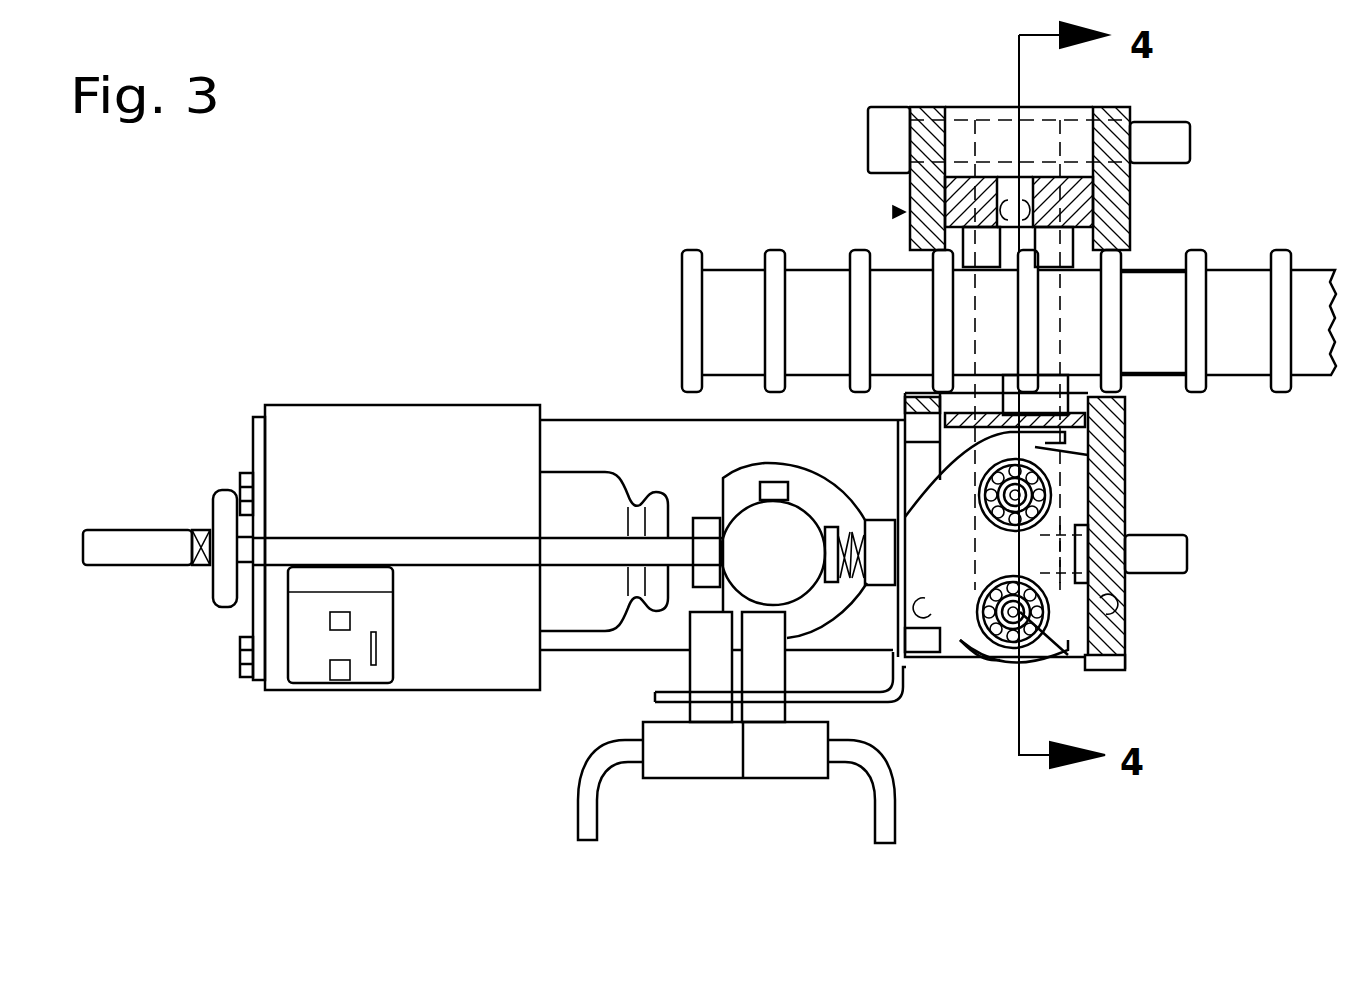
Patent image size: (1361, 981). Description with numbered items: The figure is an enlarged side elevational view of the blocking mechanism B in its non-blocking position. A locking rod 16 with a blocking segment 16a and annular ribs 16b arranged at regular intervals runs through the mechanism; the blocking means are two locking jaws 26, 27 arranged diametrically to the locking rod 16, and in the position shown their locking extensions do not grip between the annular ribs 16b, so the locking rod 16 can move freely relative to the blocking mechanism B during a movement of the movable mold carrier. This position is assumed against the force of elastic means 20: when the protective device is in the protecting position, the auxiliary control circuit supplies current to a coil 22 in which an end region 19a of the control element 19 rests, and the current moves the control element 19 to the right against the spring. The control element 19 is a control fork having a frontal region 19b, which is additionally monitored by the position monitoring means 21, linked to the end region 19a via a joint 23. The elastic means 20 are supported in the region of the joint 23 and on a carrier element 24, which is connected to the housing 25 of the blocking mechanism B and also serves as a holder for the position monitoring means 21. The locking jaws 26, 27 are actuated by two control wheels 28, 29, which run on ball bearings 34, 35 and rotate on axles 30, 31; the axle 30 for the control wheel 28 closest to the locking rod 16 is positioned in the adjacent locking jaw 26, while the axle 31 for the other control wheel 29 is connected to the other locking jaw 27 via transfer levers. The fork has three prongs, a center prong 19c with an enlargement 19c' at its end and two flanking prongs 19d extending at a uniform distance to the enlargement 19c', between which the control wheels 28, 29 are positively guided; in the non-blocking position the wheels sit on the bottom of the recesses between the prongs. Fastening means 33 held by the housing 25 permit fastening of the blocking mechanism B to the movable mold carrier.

The locking rod 16 is at (1315, 365).
The blocking segment 16a is at (1150, 337).
The annular ribs 16b is at (1278, 387).
The control element 19 is at (700, 600).
The end region 19a is at (133, 548).
The frontal region 19b is at (812, 608).
The center prong 19c is at (1164, 535).
The enlargement 19c' is at (1147, 576).
The flanking prongs 19d is at (1030, 668).
The elastic means 20 is at (870, 520).
The position monitoring means 21 is at (768, 665).
The coil 22 is at (393, 435).
The joint 23 is at (792, 577).
The carrier element 24 is at (903, 662).
The housing 25 is at (1108, 210).
The locking jaw 26 is at (985, 412).
The locking jaw 27 is at (970, 200).
The control wheel 28 is at (1057, 498).
The control wheel 29 is at (1010, 650).
The axle 30 is at (995, 530).
The axle 31 is at (995, 670).
The fastening means 33 is at (1162, 553).
The ball bearing 34 is at (990, 495).
The ball bearing 35 is at (1040, 628).
The blocking mechanism B is at (893, 212).